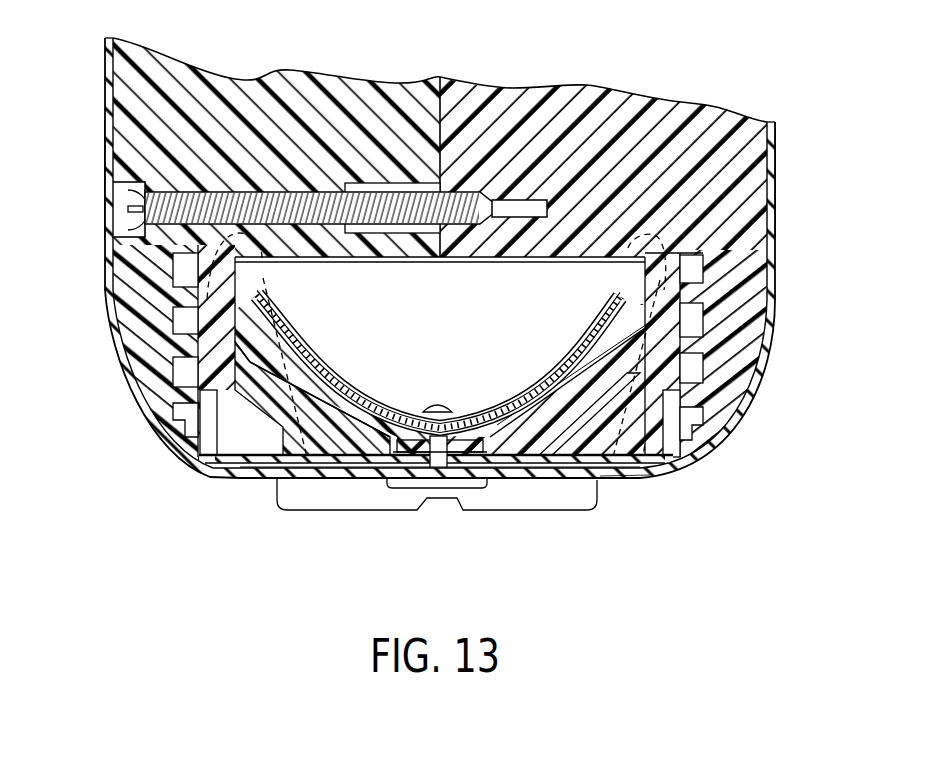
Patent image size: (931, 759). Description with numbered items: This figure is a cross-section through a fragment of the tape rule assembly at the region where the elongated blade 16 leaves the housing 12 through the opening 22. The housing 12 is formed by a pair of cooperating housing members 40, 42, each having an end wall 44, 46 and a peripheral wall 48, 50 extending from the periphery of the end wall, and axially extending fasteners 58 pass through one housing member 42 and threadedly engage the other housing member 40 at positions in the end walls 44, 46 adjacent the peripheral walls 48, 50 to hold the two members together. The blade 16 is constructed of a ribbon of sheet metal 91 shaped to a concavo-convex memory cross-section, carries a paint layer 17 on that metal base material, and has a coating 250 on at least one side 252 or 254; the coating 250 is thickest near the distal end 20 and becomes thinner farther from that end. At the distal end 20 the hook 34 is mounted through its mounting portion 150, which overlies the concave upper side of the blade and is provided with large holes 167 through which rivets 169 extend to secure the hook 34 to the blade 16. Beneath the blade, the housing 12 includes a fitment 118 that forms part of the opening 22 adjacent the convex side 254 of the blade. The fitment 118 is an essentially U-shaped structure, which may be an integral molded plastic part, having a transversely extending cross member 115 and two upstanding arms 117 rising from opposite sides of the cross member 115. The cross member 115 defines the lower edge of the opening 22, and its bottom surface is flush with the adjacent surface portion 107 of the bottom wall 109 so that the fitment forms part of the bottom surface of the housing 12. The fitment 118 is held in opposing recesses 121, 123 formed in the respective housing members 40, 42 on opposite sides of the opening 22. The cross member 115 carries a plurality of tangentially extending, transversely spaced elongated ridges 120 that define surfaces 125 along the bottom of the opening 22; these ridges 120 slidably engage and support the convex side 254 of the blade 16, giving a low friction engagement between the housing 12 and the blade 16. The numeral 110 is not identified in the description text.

The housing 12 is at (104, 276).
The elongated blade 16 is at (537, 437).
The paint layer 17 is at (290, 468).
The distal end 20 is at (345, 445).
The opening 22 is at (482, 262).
The hook 34 is at (578, 498).
The housing member 40 is at (510, 109).
The housing member 42 is at (380, 114).
The end wall 44 is at (777, 143).
The end wall 46 is at (104, 170).
The peripheral wall 48 is at (617, 113).
The peripheral wall 50 is at (327, 84).
The fasteners 58 is at (229, 206).
The sheet metal 91 is at (383, 410).
The surface portion 107 is at (240, 480).
The bottom wall 109 is at (650, 480).
The outer shell 110 is at (125, 370).
The cross member 115 is at (500, 483).
The upstanding arms 117 is at (185, 405).
The fitment 118 is at (207, 460).
The elongated ridges 120 is at (322, 462).
The recess 121 is at (665, 350).
The recess 123 is at (173, 313).
The surfaces 125 is at (340, 390).
The mounting portion 150 is at (477, 417).
The holes 167 is at (447, 452).
The rivets 169 is at (432, 480).
The coating 250 is at (290, 347).
The side 252 is at (580, 350).
The convex side 254 is at (672, 452).